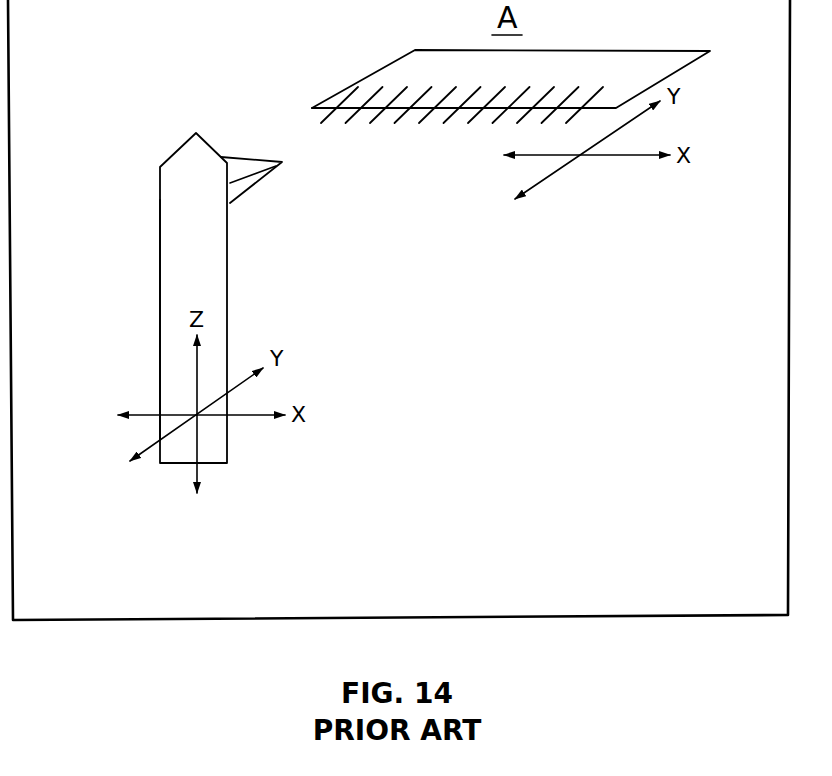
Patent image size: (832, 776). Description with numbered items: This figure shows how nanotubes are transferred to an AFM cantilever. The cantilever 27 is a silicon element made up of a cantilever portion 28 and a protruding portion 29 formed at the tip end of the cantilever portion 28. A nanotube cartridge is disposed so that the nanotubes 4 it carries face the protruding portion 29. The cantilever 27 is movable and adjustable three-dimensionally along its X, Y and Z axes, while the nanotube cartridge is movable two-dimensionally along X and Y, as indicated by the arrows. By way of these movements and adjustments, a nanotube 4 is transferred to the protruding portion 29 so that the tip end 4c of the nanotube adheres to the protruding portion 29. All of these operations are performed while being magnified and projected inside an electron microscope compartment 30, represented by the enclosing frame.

The nanotube 4 is at (440, 112).
The tip end of the nanotube 4c is at (322, 118).
The cantilever 27 is at (133, 209).
The cantilever portion 28 is at (183, 272).
The protruding portion 29 is at (245, 168).
The electron microscope compartment 30 is at (697, 458).